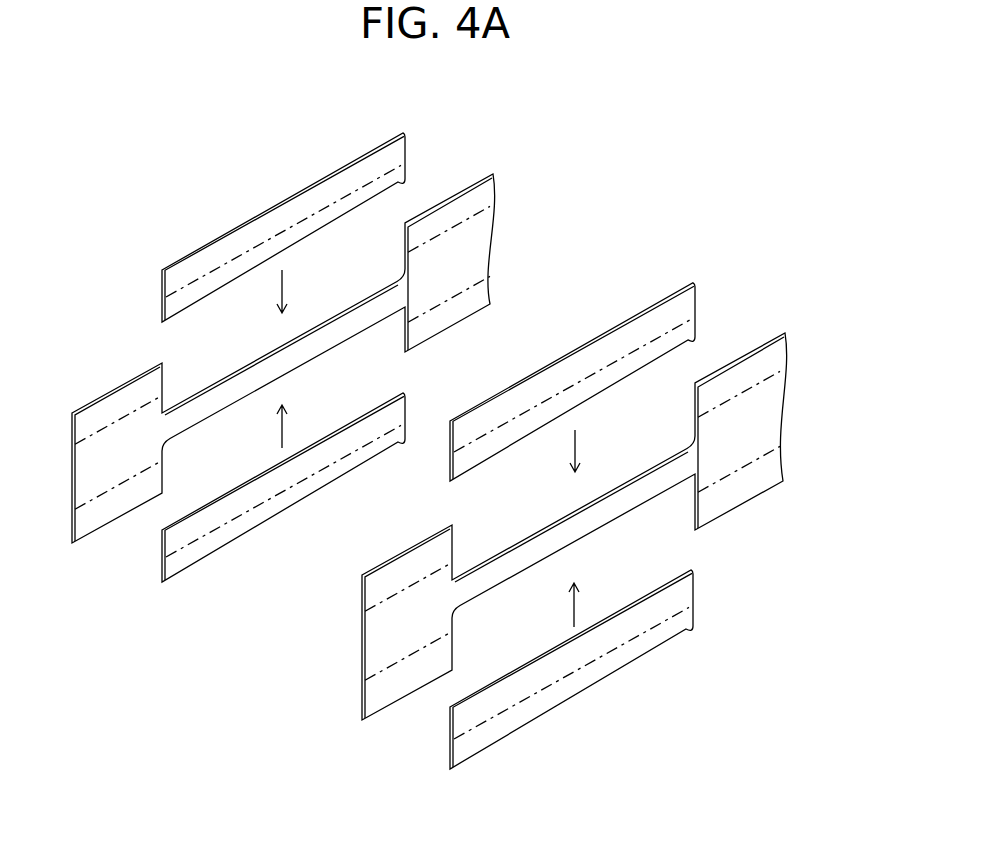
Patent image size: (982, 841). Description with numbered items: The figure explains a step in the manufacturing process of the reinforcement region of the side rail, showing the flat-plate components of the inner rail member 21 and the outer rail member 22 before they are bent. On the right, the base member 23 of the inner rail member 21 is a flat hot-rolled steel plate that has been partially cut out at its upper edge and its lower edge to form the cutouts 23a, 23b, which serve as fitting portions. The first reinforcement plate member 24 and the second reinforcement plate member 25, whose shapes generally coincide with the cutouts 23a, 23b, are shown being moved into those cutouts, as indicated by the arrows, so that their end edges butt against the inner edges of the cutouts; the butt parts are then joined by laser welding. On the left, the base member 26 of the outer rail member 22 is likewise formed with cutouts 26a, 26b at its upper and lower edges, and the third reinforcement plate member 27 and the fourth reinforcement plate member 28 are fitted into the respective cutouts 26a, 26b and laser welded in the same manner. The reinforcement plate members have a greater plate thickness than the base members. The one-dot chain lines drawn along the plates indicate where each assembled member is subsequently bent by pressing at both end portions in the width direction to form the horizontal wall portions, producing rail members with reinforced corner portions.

The inner rail member 21 is at (752, 322).
The outer rail member 22 is at (453, 162).
The base member 23 is at (738, 507).
The cutout 23a is at (622, 482).
The cutout 23b is at (630, 510).
The first reinforcement plate member 24 is at (628, 335).
The second reinforcement plate member 25 is at (670, 633).
The base member 26 is at (447, 332).
The cutout 26a is at (337, 312).
The cutout 26b is at (345, 341).
The third reinforcement plate member 27 is at (290, 208).
The fourth reinforcement plate member 28 is at (247, 525).